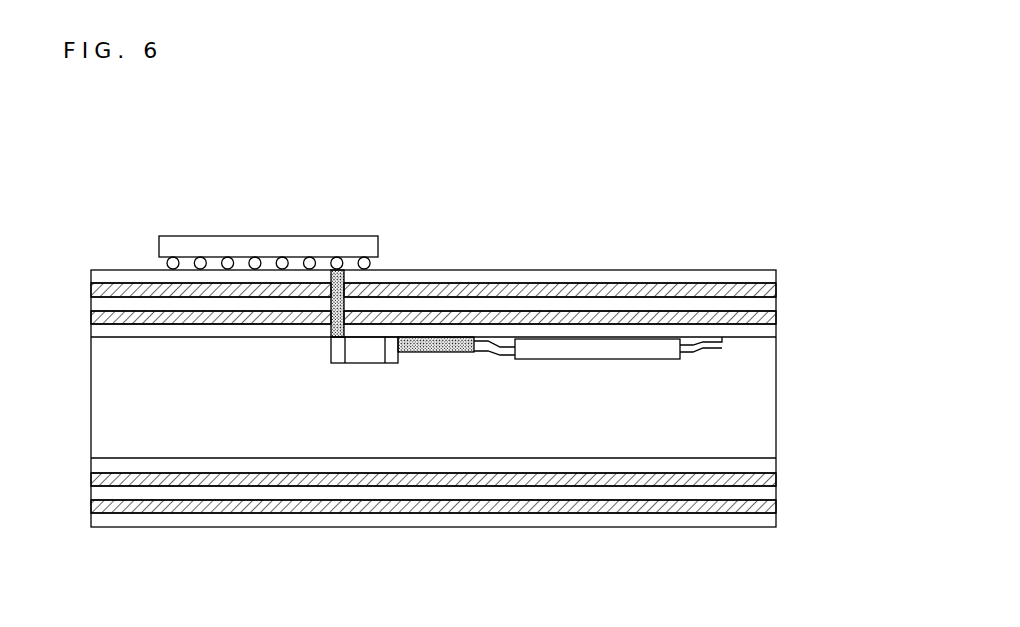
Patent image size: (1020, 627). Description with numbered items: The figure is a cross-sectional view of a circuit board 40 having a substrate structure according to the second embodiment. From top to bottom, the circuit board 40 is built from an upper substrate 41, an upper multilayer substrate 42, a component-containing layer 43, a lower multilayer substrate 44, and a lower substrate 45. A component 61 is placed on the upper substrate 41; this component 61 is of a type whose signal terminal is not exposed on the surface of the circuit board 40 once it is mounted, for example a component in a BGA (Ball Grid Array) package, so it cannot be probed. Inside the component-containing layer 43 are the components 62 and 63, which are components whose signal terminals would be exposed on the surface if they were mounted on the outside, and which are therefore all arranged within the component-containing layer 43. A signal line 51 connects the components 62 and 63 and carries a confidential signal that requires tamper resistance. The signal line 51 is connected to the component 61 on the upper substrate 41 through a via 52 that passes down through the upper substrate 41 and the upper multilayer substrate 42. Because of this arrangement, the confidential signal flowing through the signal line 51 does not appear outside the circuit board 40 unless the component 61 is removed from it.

The circuit board 40 is at (207, 165).
The upper substrate 41 is at (475, 278).
The upper multilayer substrate 42 is at (475, 305).
The component-containing layer 43 is at (475, 397).
The lower multilayer substrate 44 is at (475, 485).
The lower substrate 45 is at (475, 512).
The signal line 51 is at (465, 278).
The via 52 is at (393, 278).
The component 61 is at (268, 226).
The component 62 is at (376, 457).
The component 63 is at (598, 281).